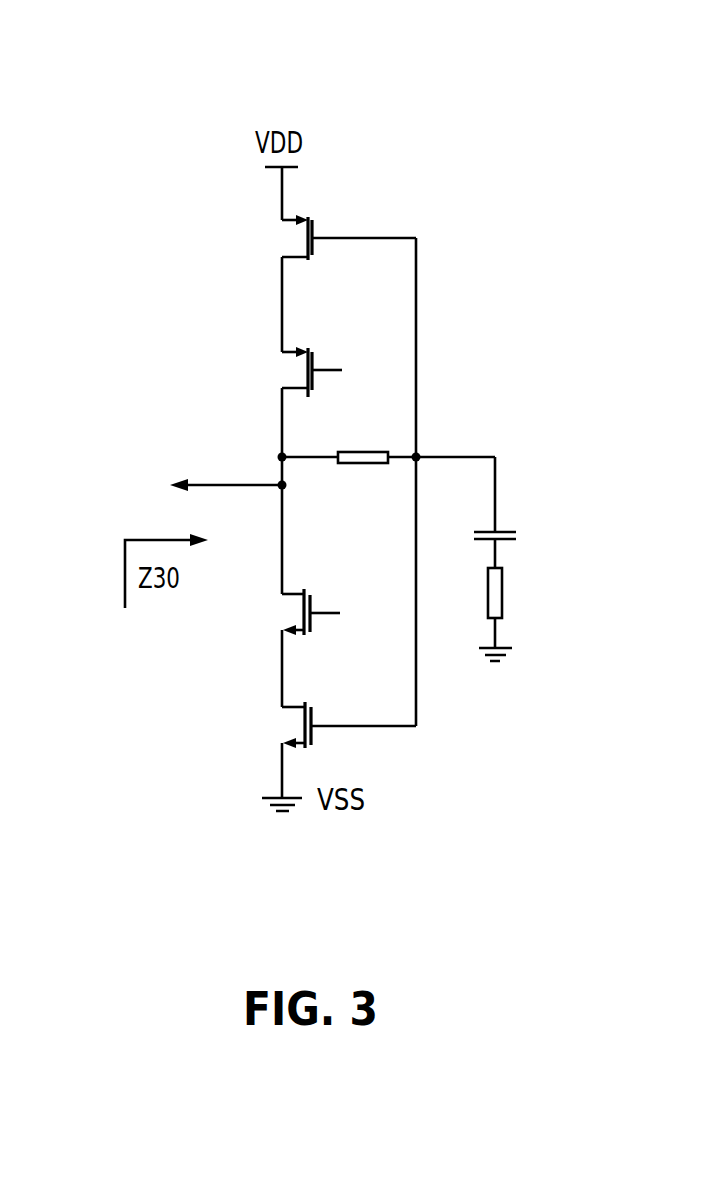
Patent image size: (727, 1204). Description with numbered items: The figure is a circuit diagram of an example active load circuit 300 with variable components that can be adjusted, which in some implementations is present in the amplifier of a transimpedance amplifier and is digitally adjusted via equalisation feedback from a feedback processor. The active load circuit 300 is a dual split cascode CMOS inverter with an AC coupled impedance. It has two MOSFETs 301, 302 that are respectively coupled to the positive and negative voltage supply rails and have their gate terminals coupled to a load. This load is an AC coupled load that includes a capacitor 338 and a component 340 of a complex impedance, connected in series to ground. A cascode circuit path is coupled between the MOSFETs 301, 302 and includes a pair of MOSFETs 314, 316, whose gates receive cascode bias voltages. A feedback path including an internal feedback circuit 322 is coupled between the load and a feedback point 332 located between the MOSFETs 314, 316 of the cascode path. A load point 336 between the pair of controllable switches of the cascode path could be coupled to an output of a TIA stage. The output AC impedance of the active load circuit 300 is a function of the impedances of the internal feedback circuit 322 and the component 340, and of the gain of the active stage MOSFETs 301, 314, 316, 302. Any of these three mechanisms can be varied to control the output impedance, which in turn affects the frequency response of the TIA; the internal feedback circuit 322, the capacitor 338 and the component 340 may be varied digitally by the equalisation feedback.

The active load circuit 300 is at (115, 88).
The MOSFET 301 is at (285, 238).
The MOSFET 314 is at (285, 370).
The feedback point 332 is at (278, 456).
The internal feedback circuit 322 is at (350, 449).
The load point 336 is at (286, 488).
The MOSFET 316 is at (285, 615).
The MOSFET 302 is at (287, 726).
The capacitor 338 is at (520, 535).
The component of a complex impedance 340 is at (503, 596).